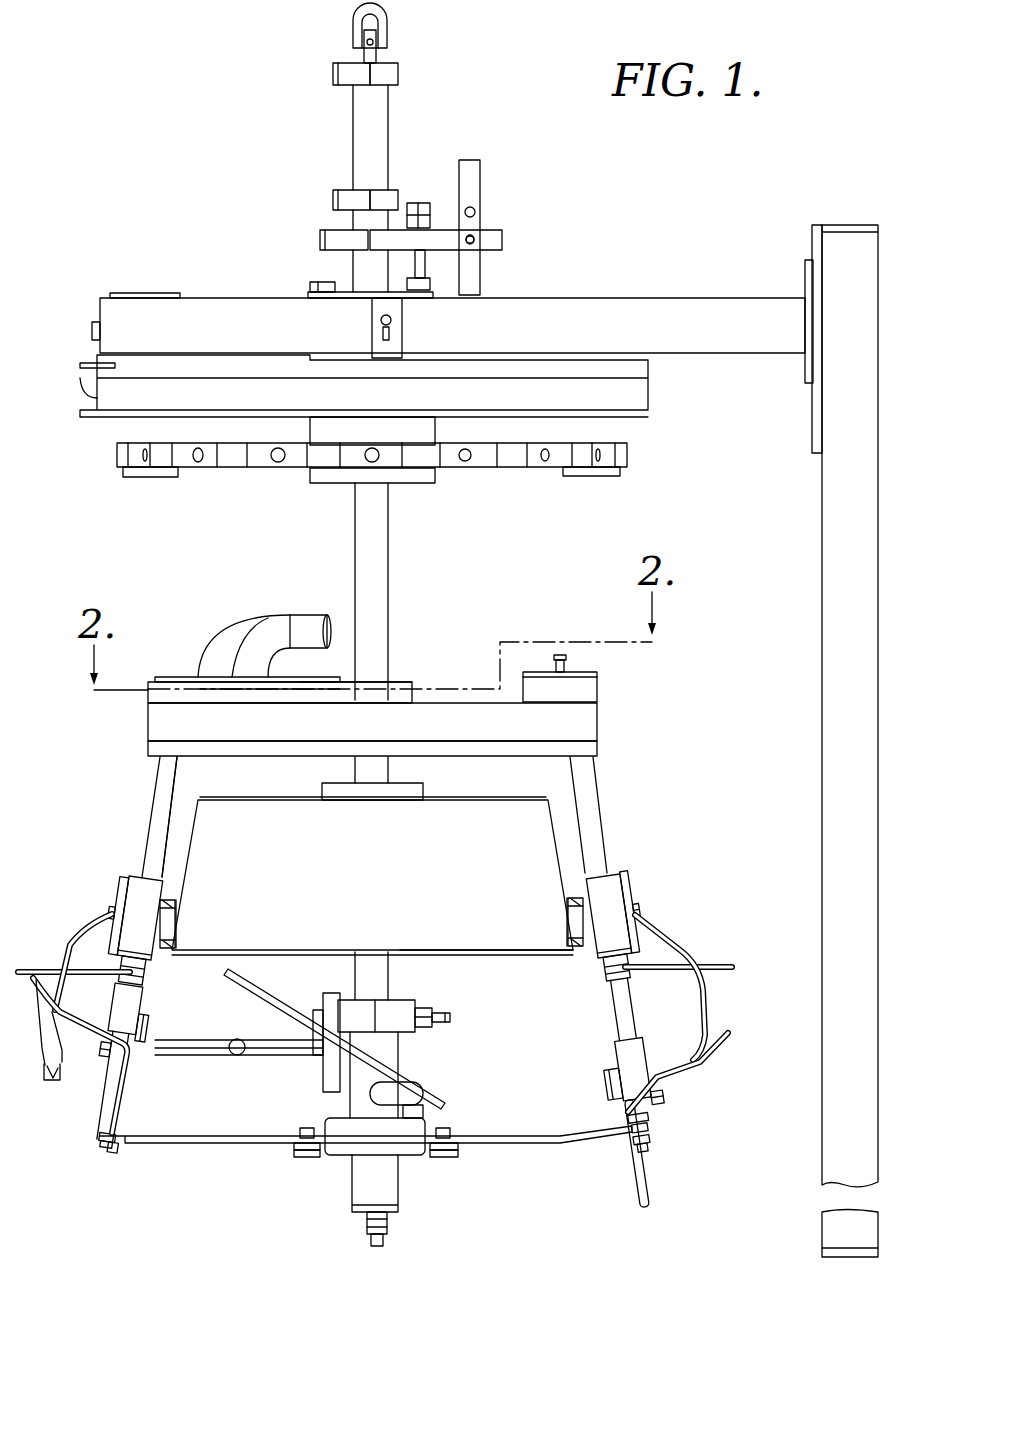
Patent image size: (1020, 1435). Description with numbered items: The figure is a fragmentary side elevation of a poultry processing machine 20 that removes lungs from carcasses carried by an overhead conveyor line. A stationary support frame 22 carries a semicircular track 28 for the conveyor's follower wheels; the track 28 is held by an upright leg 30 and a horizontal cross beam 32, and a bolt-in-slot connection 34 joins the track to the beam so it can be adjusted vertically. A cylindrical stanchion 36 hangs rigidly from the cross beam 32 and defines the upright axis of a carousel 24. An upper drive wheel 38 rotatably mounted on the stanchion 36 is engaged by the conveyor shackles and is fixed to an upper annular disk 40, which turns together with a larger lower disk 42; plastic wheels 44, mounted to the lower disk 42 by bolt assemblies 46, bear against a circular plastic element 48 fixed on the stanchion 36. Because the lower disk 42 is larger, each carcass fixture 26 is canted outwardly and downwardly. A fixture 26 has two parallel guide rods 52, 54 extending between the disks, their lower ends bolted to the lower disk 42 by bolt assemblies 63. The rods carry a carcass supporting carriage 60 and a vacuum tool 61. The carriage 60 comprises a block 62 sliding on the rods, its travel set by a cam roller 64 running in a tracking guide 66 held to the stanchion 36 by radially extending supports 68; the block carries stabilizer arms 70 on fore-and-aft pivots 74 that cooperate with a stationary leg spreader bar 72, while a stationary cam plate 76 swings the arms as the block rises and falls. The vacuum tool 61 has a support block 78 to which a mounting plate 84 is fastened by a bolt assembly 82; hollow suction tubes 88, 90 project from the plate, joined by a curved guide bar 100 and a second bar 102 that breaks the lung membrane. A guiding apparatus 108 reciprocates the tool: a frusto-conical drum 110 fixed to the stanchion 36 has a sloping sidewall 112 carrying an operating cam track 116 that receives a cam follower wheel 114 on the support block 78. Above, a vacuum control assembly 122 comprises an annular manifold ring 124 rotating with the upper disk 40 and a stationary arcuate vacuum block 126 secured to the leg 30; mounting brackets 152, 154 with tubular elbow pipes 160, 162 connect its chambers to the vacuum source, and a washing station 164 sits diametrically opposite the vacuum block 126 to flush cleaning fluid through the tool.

The poultry processing machine 20 is at (245, 218).
The stationary support frame 22 is at (700, 290).
The carousel 24 is at (612, 750).
The carcass fixture 26 is at (122, 858).
The semicircular-shaped track 28 is at (97, 392).
The upright leg 30 is at (820, 580).
The horizontal cross beam 32 is at (683, 347).
The bolt-in-slot connection 34 is at (402, 318).
The cylindrical stanchion 36 is at (390, 525).
The upper drive wheel 38 is at (627, 455).
The upper annular disk 40 is at (162, 758).
The lower annular disk 42 is at (175, 1143).
The plastic wheels 44 is at (296, 1148).
The bolt assemblies 46 is at (448, 1126).
The circular plastic element 48 is at (410, 1150).
The guide rod 52 is at (590, 813).
The guide rod 54 is at (168, 798).
The carcass supporting carriage 60 is at (138, 1063).
The vacuum tool 61 is at (108, 890).
The block 62 is at (128, 1000).
The bolt assemblies 63 is at (103, 1142).
The cam roller 64 is at (150, 1018).
The tracking guide 66 is at (393, 1080).
The radially extending supports 68 is at (240, 1052).
The stabilizer arms 70 is at (123, 1108).
The leg spreader bar 72 is at (35, 968).
The fore-and-aft pivots 74 is at (100, 1052).
The stationary cam plate 76 is at (125, 1140).
The support block 78 is at (145, 955).
The bolt assembly 82 is at (112, 913).
The mounting plate 84 is at (620, 876).
The suction tube 88 is at (695, 1012).
The suction tube 90 is at (45, 1040).
The curved guide bar 100 is at (45, 1072).
The second bar 102 is at (55, 1078).
The guiding apparatus 108 is at (540, 950).
The frusto-conically shaped drum 110 is at (453, 797).
The sidewall 112 is at (370, 870).
The cam follower wheel 114 is at (178, 915).
The operating cam track 116 is at (174, 888).
The vacuum control assembly 122 is at (145, 715).
The annular manifold ring 124 is at (572, 718).
The arcuate vacuum block 126 is at (240, 700).
The mounting bracket 152 is at (327, 672).
The mounting bracket 154 is at (182, 677).
The tubular elbow pipe 160 is at (306, 620).
The tubular elbow pipe 162 is at (237, 627).
The washing station 164 is at (605, 688).